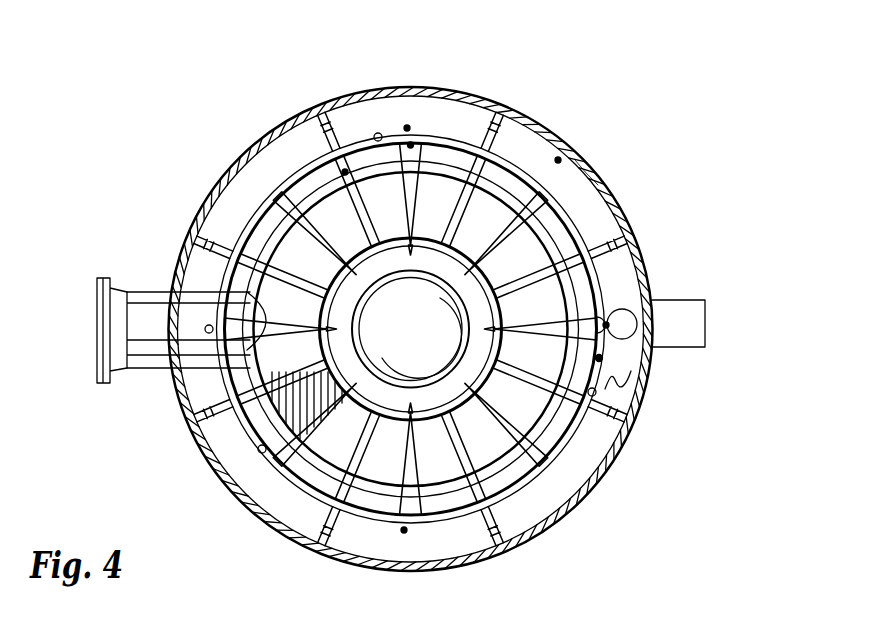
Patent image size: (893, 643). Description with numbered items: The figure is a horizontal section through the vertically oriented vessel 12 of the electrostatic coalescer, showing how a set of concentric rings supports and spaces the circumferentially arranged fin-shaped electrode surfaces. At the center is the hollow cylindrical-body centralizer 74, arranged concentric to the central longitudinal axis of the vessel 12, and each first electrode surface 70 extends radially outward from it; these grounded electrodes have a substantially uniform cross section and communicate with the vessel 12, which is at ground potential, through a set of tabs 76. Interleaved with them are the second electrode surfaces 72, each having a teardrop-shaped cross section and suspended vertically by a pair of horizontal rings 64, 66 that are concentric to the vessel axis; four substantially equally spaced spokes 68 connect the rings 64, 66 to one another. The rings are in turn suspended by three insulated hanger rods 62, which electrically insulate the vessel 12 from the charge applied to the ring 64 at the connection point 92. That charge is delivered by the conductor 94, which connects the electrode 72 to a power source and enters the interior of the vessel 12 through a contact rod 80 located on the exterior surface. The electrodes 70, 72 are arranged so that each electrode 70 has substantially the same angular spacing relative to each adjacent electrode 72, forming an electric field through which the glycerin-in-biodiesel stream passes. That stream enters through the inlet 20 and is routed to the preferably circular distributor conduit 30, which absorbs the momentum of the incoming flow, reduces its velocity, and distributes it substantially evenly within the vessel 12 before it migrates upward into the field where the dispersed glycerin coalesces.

The vessel 12 is at (207, 172).
The inlet 20 is at (100, 288).
The distributor conduit 30 is at (327, 468).
The insulated hanger rods 62 is at (378, 134).
The ring 64 is at (440, 135).
The ring 66 is at (428, 238).
The spokes 68 is at (604, 296).
The first electrode surface 70 is at (600, 192).
The second electrode surface 72 is at (246, 296).
The centralizer 74 is at (344, 273).
The tabs 76 is at (312, 124).
The contact rod 80 is at (623, 326).
The connection point 92 is at (603, 359).
The conductor 94 is at (632, 383).